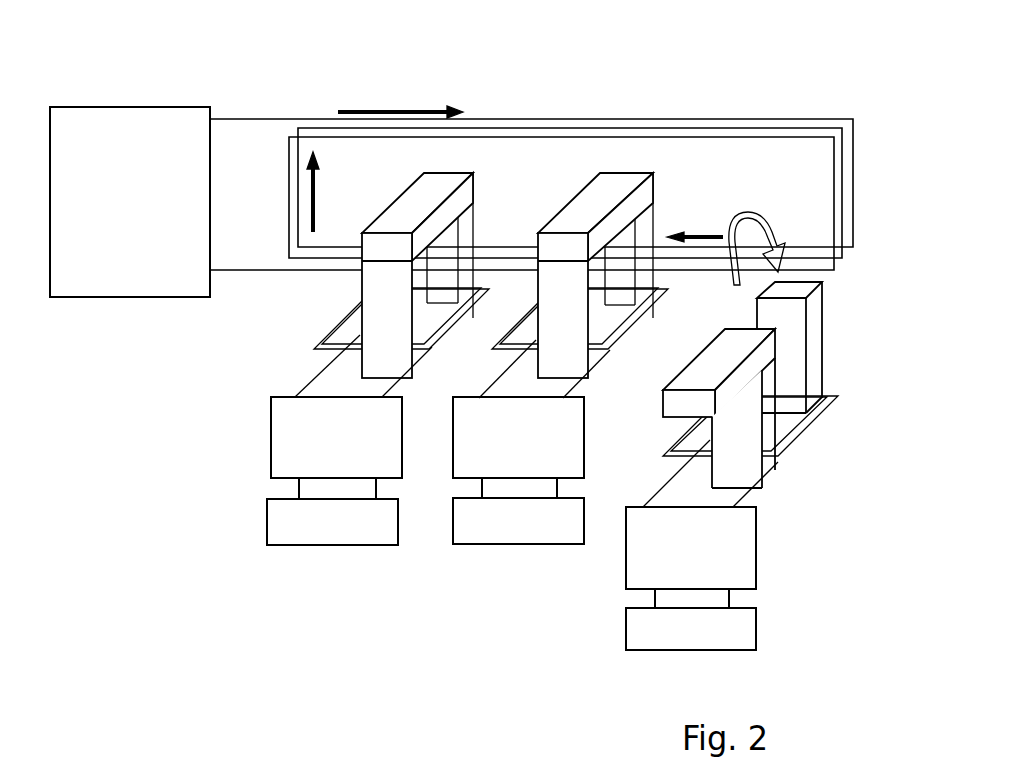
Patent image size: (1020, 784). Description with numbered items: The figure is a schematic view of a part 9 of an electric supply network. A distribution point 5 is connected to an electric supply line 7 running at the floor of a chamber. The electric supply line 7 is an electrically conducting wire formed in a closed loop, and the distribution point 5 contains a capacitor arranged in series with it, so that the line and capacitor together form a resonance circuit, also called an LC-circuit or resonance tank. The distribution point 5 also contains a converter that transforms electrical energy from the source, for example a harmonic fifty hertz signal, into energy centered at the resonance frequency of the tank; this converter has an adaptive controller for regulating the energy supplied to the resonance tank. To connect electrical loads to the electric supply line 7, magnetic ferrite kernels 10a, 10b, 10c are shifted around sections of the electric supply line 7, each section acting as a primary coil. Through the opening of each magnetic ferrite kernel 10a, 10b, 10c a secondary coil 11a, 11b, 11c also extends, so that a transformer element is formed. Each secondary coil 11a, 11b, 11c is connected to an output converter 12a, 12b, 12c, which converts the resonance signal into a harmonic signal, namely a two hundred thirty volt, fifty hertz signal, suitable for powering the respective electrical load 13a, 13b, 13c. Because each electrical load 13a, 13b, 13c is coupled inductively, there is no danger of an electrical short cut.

The distribution point 5 is at (136, 213).
The electric supply line 7 is at (578, 118).
The part of the electric supply network 9 is at (806, 41).
The magnetic ferrite kernel 10a is at (440, 190).
The magnetic ferrite kernel 10b is at (598, 193).
The magnetic ferrite kernel 10c is at (814, 332).
The secondary coil 11a is at (332, 331).
The secondary coil 11b is at (635, 325).
The secondary coil 11c is at (806, 435).
The output converter 12a is at (355, 451).
The output converter 12b is at (539, 450).
The output converter 12c is at (712, 558).
The electrical load 13a is at (355, 531).
The electrical load 13b is at (539, 530).
The electrical load 13c is at (711, 638).